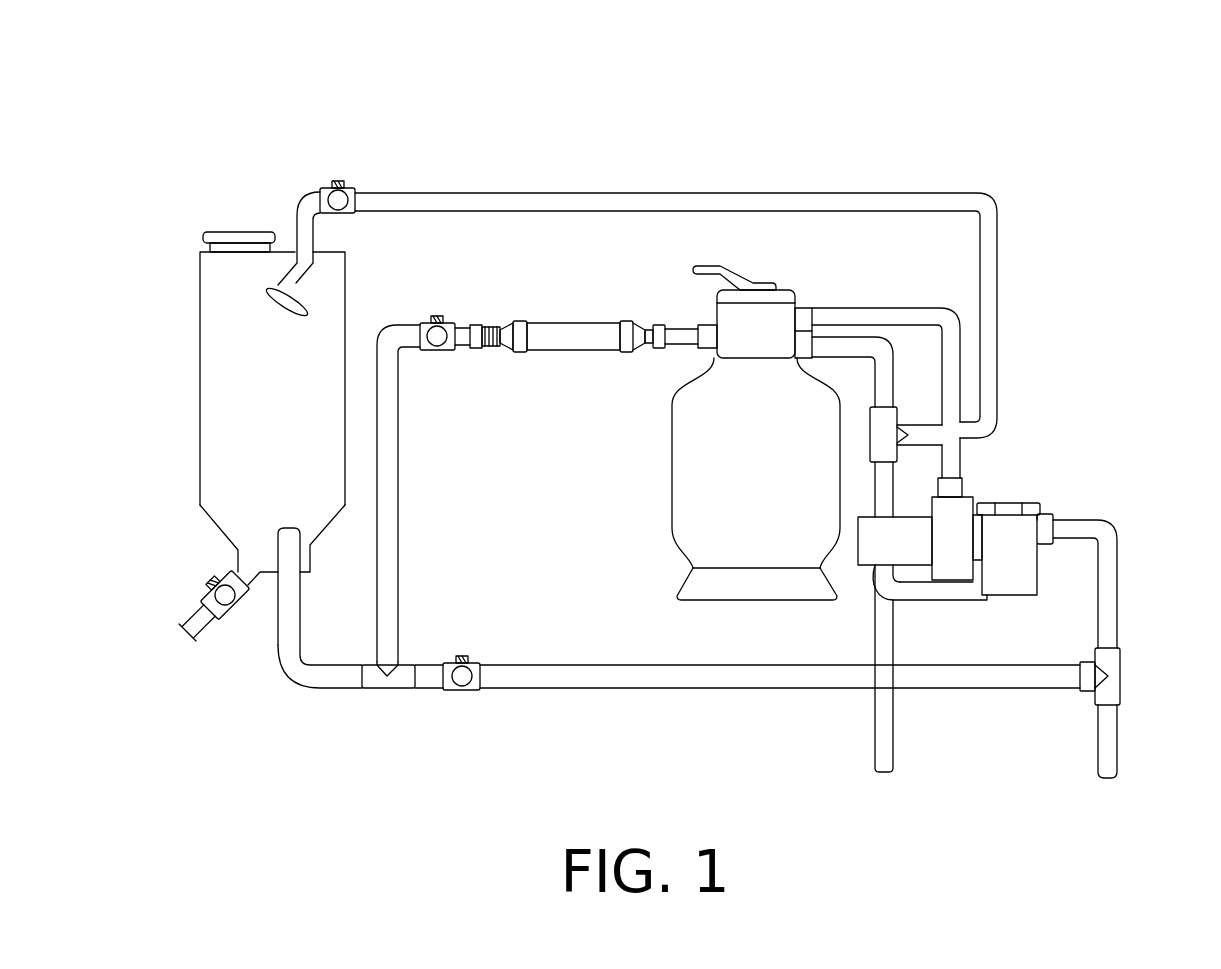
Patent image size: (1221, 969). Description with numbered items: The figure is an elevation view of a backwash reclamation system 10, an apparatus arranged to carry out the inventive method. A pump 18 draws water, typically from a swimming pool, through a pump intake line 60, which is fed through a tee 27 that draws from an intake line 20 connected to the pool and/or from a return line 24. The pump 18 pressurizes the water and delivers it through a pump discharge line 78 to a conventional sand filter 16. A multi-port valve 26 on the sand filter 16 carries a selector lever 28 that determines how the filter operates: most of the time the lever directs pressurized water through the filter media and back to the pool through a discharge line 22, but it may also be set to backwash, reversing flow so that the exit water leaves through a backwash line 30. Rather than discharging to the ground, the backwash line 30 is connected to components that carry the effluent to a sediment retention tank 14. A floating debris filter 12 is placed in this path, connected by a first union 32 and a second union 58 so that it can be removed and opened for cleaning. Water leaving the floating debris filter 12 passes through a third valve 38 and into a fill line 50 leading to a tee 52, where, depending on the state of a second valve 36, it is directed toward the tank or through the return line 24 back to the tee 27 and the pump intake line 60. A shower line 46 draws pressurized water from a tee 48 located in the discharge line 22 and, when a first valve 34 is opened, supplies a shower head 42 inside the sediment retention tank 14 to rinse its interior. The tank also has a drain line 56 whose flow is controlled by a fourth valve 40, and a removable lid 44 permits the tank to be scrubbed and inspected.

The backwash reclamation system 10 is at (708, 162).
The floating debris filter 12 is at (570, 335).
The sediment retention tank 14 is at (213, 282).
The sand filter 16 is at (700, 495).
The pump 18 is at (1005, 545).
The intake line 20 is at (1105, 760).
The discharge line 22 is at (890, 700).
The return line 24 is at (705, 680).
The multi-port valve 26 is at (762, 320).
The tee 27 is at (1110, 675).
The selector lever 28 is at (720, 265).
The backwash line 30 is at (686, 352).
The first union 32 is at (668, 348).
The first valve 34 is at (333, 187).
The second valve 36 is at (470, 690).
The third valve 38 is at (437, 320).
The fourth valve 40 is at (215, 580).
The shower head 42 is at (282, 300).
The lid 44 is at (245, 232).
The shower line 46 is at (457, 197).
The tee 48 is at (890, 430).
The fill line 50 is at (390, 580).
The tee 52 is at (378, 680).
The drain line 56 is at (200, 615).
The second union 58 is at (490, 330).
The pump intake line 60 is at (1110, 595).
The pump discharge line 78 is at (950, 345).